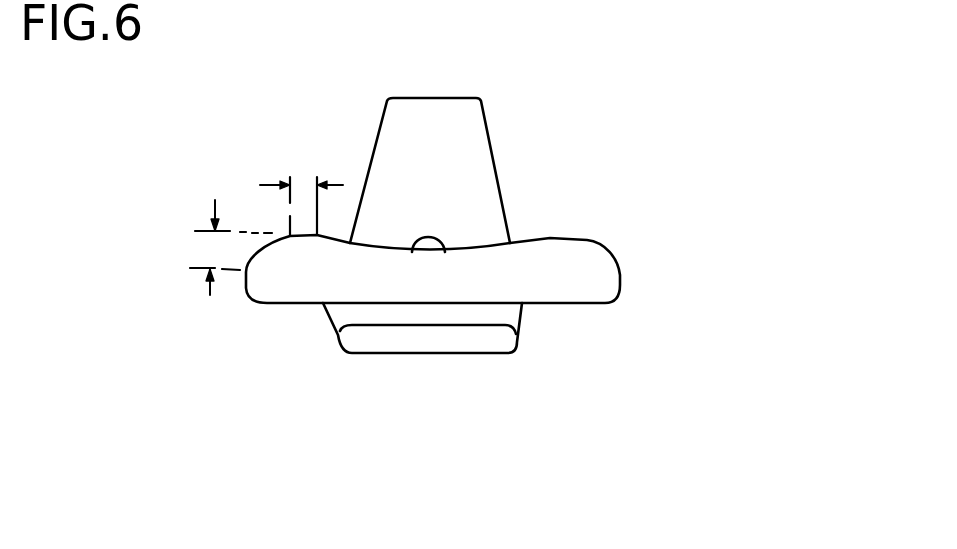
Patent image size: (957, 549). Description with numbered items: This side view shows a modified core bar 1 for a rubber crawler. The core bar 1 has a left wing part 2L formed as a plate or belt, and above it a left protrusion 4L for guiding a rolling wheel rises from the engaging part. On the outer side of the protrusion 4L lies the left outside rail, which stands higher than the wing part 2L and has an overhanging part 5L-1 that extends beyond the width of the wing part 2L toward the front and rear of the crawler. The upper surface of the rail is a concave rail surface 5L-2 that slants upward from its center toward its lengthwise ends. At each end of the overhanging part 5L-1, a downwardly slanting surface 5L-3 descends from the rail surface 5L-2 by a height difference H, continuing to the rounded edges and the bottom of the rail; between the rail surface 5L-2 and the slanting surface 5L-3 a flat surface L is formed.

The core bar 1 is at (594, 153).
The left wing part 2L is at (480, 345).
The left protrusion 4L is at (445, 115).
The left overhanging part 5L-1 is at (265, 304).
The left rail surface 5L-2 is at (422, 240).
The left slanting surface 5L-3 is at (615, 262).
The flat surface L is at (306, 185).
The height difference H is at (220, 247).